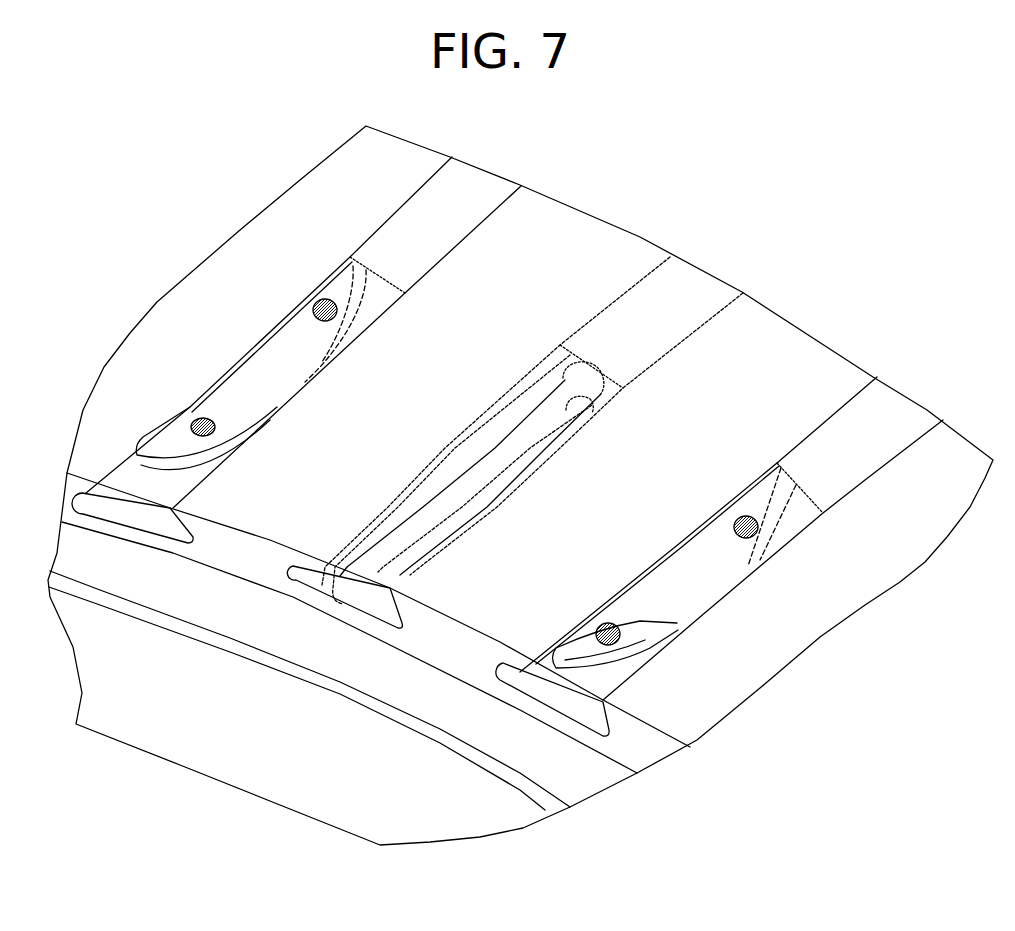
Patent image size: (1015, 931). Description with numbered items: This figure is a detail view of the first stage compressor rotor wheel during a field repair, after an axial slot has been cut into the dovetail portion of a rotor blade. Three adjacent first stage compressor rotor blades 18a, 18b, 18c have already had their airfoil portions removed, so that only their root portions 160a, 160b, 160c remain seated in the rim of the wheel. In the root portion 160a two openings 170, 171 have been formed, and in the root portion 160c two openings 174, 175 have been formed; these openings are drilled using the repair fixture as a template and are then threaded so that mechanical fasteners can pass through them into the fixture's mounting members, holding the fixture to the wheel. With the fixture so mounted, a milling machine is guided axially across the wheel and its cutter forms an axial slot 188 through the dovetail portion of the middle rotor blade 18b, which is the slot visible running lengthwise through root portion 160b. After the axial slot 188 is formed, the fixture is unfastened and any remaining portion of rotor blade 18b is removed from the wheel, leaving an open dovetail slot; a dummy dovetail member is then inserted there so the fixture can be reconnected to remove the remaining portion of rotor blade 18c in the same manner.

The first stage compressor rotor blade 18a is at (242, 490).
The first stage compressor rotor blade 18b is at (462, 585).
The first stage compressor rotor blade 18c is at (660, 700).
The root portion 160a is at (381, 326).
The root portion 160b is at (607, 419).
The root portion 160c is at (801, 529).
The opening 170 is at (320, 300).
The opening 171 is at (200, 417).
The opening 174 is at (780, 548).
The opening 175 is at (665, 622).
The axial slot 188 is at (540, 388).